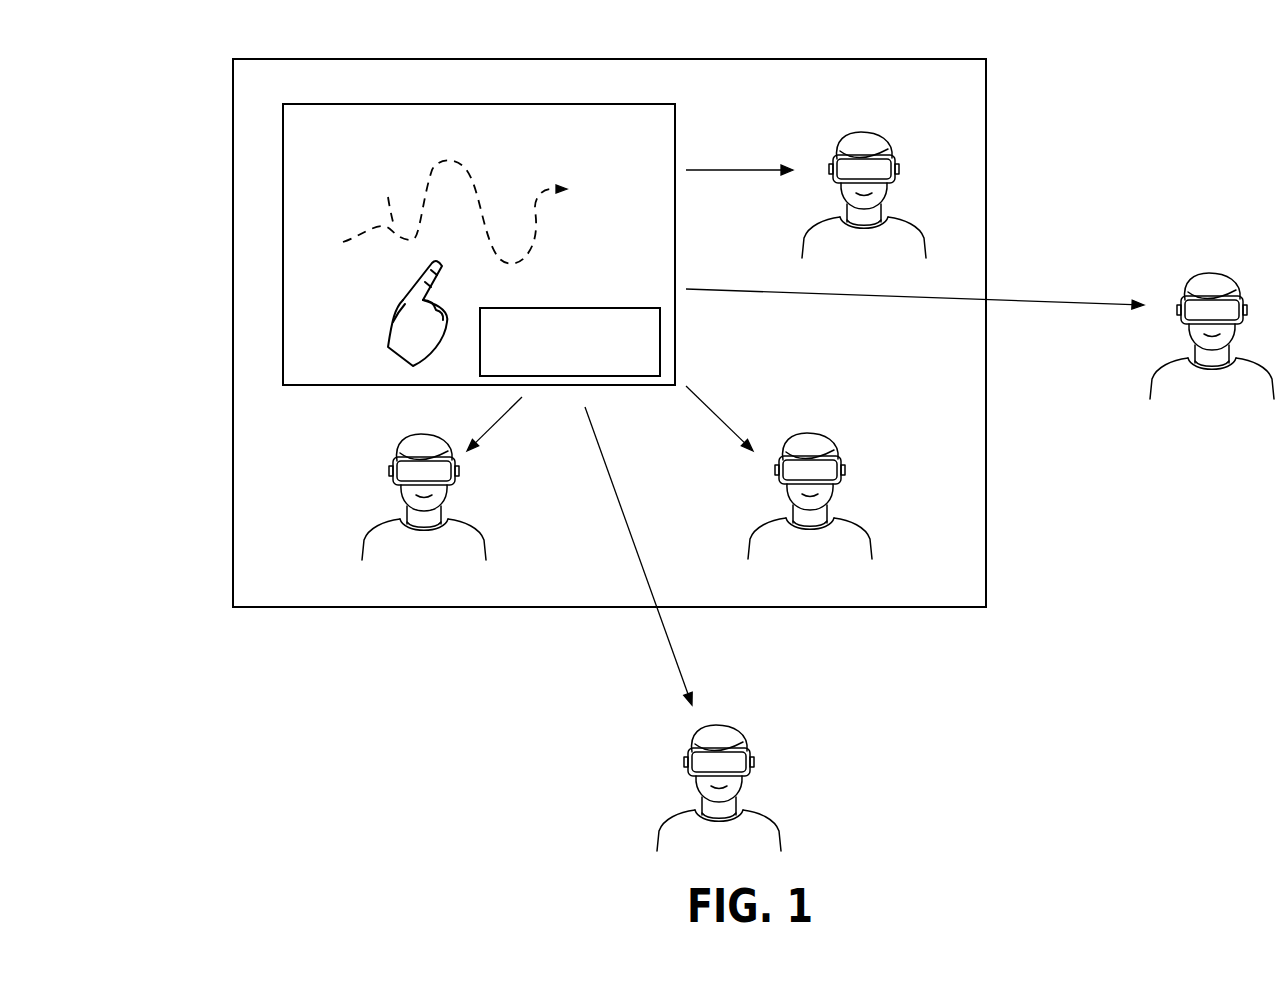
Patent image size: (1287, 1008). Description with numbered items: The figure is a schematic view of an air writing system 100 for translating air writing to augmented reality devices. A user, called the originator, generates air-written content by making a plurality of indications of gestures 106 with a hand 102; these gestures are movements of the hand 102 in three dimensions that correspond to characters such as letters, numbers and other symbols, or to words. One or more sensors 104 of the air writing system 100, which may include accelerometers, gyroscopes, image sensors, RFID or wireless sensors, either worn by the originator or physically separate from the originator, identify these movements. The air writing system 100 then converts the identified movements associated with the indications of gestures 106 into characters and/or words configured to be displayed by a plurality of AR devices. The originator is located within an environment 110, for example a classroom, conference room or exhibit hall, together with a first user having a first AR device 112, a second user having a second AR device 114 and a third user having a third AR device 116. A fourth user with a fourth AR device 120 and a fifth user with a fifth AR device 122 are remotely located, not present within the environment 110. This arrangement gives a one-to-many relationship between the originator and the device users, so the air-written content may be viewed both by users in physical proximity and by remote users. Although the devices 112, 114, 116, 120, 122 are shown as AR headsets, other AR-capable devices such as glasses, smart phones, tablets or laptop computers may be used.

The air writing system 100 is at (418, 104).
The hand 102 is at (408, 323).
The sensors 104 is at (600, 308).
The indications of gestures 106 is at (430, 211).
The environment 110 is at (232, 317).
The first AR device 112 is at (913, 220).
The second AR device 114 is at (377, 520).
The third AR device 116 is at (858, 525).
The fourth AR device 120 is at (1208, 270).
The fifth AR device 122 is at (765, 812).